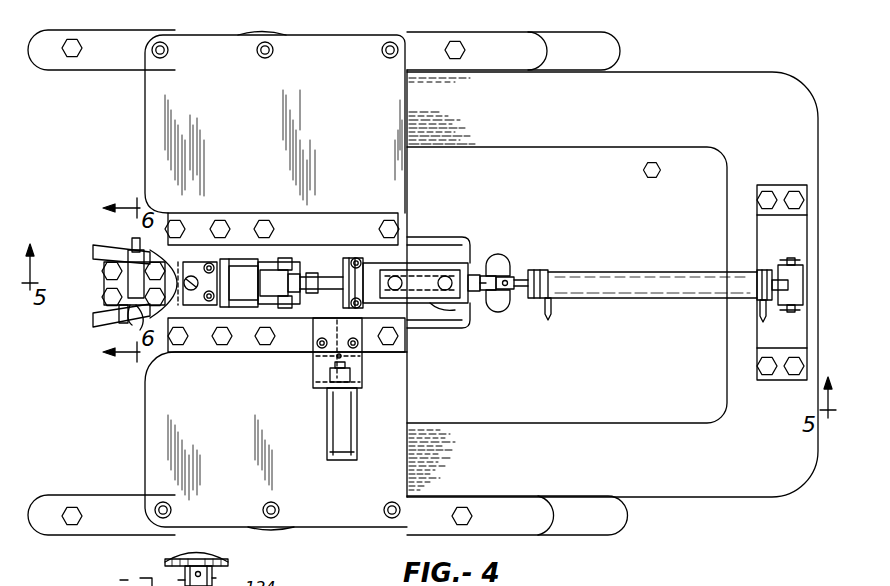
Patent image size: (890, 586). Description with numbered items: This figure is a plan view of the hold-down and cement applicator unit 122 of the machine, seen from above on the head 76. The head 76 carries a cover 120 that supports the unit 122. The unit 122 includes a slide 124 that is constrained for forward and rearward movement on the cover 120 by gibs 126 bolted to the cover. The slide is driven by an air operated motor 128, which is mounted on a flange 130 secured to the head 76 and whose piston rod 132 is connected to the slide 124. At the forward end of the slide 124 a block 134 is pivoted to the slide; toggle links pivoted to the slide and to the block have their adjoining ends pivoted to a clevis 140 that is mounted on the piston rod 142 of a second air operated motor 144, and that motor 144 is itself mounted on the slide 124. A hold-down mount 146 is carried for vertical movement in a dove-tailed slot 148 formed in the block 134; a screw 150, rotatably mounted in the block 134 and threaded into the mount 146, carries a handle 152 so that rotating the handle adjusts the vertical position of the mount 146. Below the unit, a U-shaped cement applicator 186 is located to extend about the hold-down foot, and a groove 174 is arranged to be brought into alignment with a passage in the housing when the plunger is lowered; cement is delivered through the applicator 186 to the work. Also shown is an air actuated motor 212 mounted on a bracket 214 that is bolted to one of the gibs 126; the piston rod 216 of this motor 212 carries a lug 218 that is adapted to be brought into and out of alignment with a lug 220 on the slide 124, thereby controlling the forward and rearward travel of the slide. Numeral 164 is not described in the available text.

The head 76 is at (617, 514).
The cover 120 is at (222, 55).
The hold-down and cement applicator unit 122 is at (500, 241).
The slide 124 is at (447, 247).
The gibs 126 is at (314, 230).
The air operated motor 128 is at (628, 285).
The flange 130 is at (763, 246).
The piston rod 132 is at (528, 271).
The block 134 is at (239, 272).
The clevis 140 is at (300, 263).
The piston rod 142 is at (325, 290).
The air operated motor 144 is at (410, 272).
The hold-down mount 146 is at (171, 580).
The dove-tailed slot 148 is at (196, 262).
The screw 150 is at (230, 582).
The handle 152 is at (208, 557).
The knob part 164 is at (112, 578).
The groove 174 is at (144, 580).
The cement applicator 186 is at (108, 250).
The air actuated motor 212 is at (337, 420).
The bracket 214 is at (322, 362).
The piston rod 216 is at (350, 373).
The lug 218 is at (313, 334).
The lug 220 is at (443, 303).